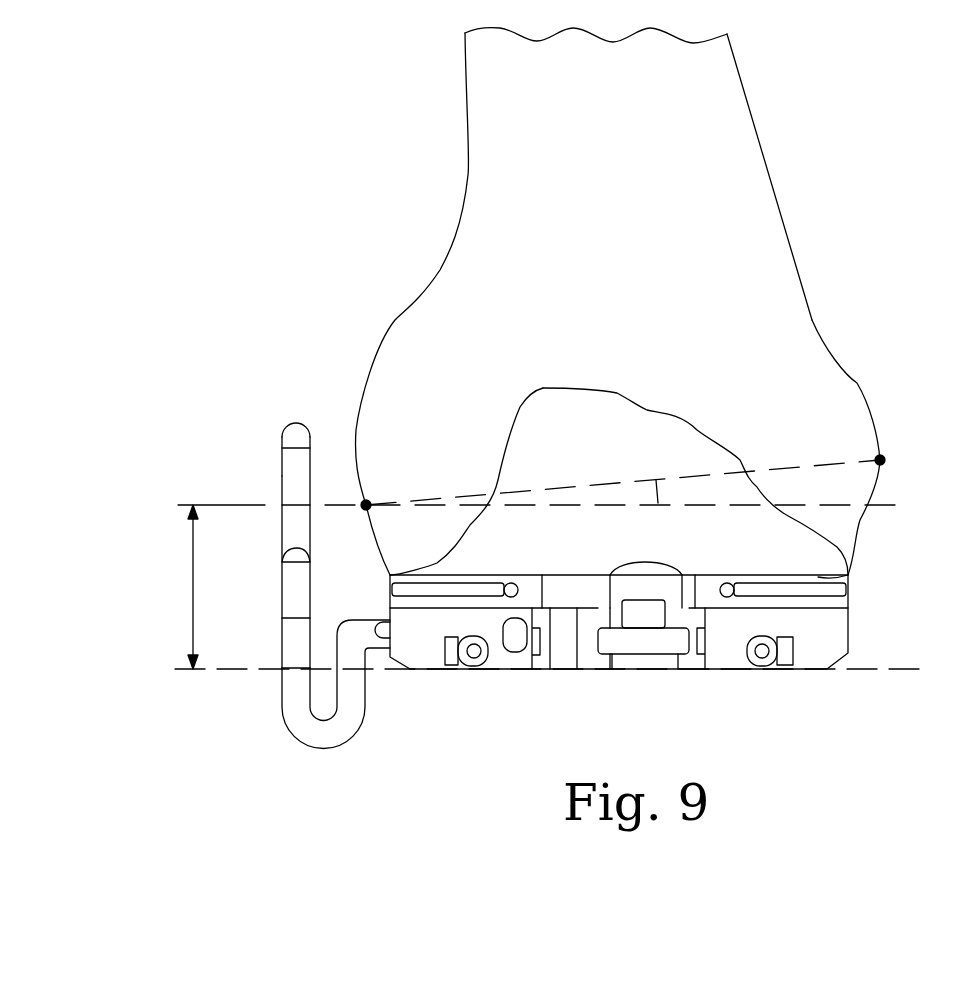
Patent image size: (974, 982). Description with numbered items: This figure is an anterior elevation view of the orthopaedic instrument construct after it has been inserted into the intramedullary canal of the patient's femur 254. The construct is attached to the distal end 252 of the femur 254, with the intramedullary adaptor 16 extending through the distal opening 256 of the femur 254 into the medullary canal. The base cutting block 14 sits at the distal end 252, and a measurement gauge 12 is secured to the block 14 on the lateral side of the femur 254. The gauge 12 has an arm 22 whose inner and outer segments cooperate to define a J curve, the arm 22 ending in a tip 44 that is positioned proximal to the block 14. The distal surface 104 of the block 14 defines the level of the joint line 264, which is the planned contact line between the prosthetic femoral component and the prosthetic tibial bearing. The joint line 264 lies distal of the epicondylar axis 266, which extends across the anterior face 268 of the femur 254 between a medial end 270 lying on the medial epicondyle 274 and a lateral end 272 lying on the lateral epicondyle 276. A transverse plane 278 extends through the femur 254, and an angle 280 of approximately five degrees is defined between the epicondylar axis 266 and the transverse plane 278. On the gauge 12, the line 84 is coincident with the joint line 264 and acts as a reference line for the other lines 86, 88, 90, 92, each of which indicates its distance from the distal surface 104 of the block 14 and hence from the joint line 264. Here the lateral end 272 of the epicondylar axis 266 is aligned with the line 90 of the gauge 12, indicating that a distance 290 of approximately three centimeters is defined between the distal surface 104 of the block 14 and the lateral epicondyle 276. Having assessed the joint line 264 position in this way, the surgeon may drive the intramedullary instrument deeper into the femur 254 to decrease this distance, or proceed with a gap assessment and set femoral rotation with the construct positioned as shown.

The measurement gauge 12 is at (322, 745).
The base cutting block 14 is at (835, 641).
The intramedullary adaptor 16 is at (641, 582).
The arm 22 is at (280, 532).
The tip 44 is at (294, 420).
The line 84 is at (290, 667).
The line 86 is at (295, 617).
The line 88 is at (281, 558).
The line 90 is at (296, 504).
The line 92 is at (296, 447).
The distal surface 104 is at (492, 669).
The distal end 252 is at (850, 575).
The femur 254 is at (748, 108).
The distal opening 256 is at (640, 565).
The joint line 264 is at (240, 672).
The epicondylar axis 266 is at (742, 473).
The anterior face 268 is at (780, 272).
The medial end 270 is at (888, 467).
The lateral end 272 is at (366, 511).
The medial epicondyle 274 is at (884, 458).
The lateral epicondyle 276 is at (363, 500).
The transverse plane 278 is at (885, 507).
The angle 280 is at (660, 490).
The distance 290 is at (198, 545).